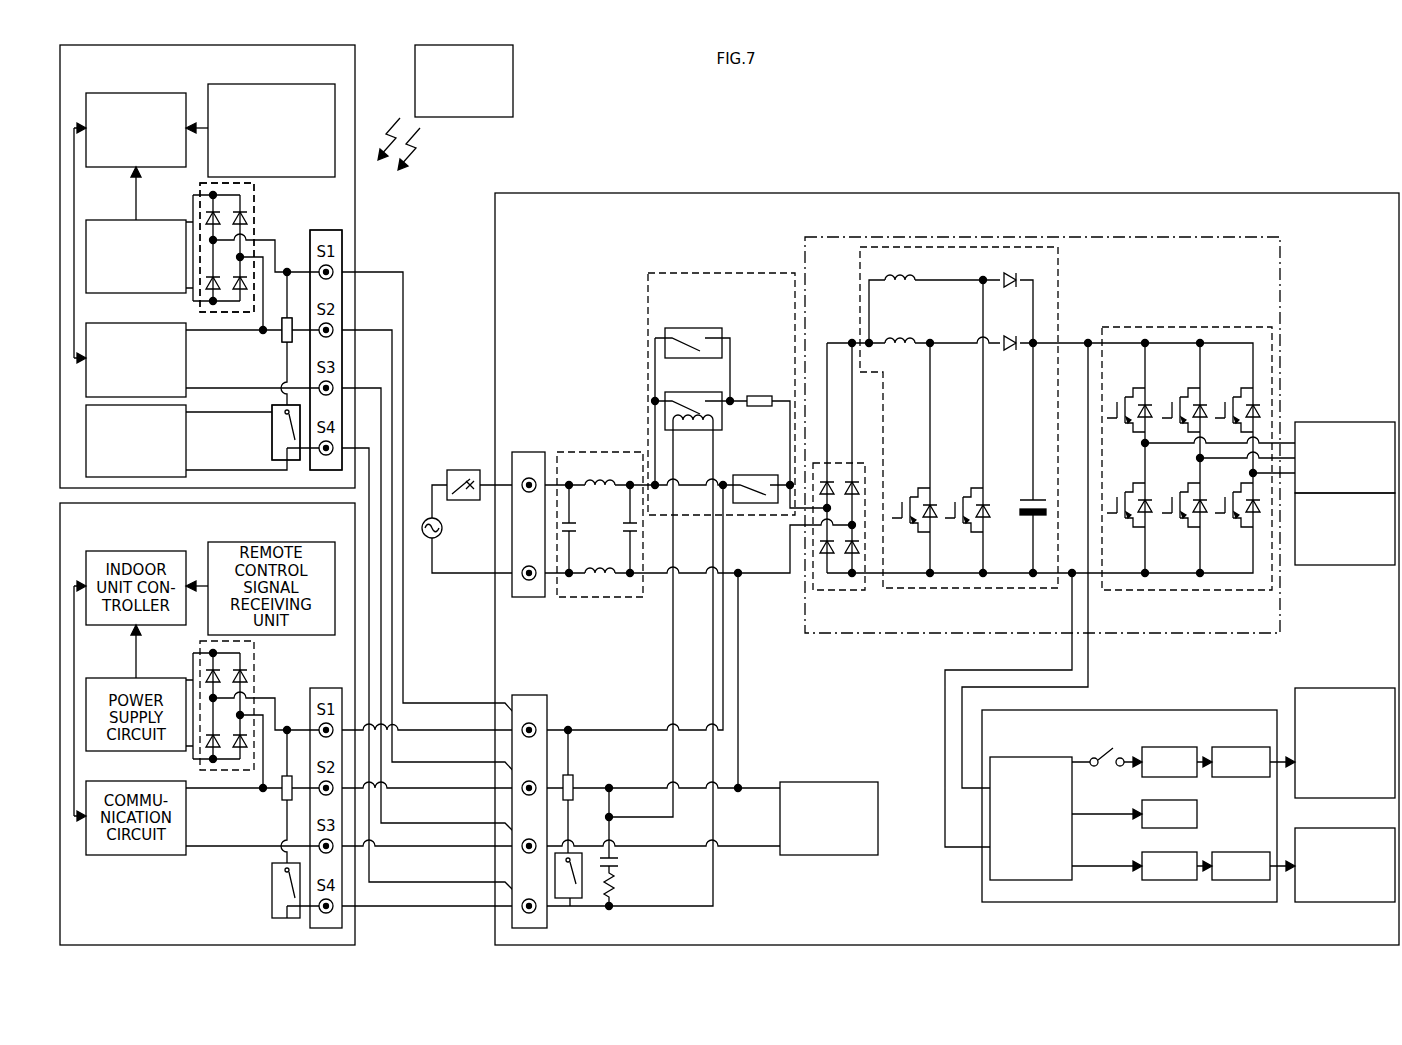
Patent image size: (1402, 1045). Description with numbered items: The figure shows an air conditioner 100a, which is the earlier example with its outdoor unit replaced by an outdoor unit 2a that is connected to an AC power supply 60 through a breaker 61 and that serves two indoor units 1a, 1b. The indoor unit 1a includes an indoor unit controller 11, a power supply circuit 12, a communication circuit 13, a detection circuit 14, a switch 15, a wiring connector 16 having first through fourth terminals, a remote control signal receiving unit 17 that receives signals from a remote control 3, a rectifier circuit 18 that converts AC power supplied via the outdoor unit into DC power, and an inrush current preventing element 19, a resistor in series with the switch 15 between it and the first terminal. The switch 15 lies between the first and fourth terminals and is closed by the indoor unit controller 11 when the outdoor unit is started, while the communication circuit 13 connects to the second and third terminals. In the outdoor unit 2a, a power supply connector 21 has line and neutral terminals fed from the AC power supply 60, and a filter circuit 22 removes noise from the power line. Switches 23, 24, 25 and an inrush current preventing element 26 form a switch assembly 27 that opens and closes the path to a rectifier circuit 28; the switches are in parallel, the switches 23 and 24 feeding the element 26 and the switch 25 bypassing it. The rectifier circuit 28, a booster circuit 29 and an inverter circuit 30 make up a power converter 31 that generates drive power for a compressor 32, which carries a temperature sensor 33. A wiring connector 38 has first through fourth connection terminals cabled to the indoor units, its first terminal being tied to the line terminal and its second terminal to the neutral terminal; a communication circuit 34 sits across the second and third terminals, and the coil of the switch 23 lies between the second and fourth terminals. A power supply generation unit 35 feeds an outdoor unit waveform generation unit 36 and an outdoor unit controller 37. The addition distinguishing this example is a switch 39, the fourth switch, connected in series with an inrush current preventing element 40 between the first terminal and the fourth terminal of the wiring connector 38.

The air conditioner 100a is at (1242, 116).
The indoor unit 1a is at (355, 240).
The indoor unit 1b is at (355, 932).
The outdoor unit 2a is at (1345, 193).
The remote control 3 is at (513, 80).
The indoor unit controller 11 is at (118, 168).
The power supply circuit 12 is at (148, 220).
The communication circuit 13 is at (140, 323).
The detection circuit 14 is at (188, 441).
The switch 15 is at (272, 424).
The wiring connector 16 is at (326, 228).
The remote control signal receiving unit 17 is at (300, 84).
The rectifier circuit 18 is at (256, 195).
The inrush current preventing element 19 is at (282, 340).
The power supply connector 21 is at (529, 450).
The filter circuit 22 is at (598, 450).
The switch 23 is at (693, 430).
The switch 24 is at (693, 328).
The switch 25 is at (755, 475).
The inrush current preventing element 26 is at (759, 396).
The switch assembly 27 is at (722, 273).
The rectifier circuit 28 is at (838, 592).
The booster circuit 29 is at (905, 590).
The inverter circuit 30 is at (1188, 590).
The power converter 31 is at (1220, 237).
The compressor 32 is at (1345, 420).
The temperature sensor 33 is at (1345, 567).
The communication circuit 34 is at (828, 780).
The power supply generation unit 35 is at (1215, 710).
The outdoor unit waveform generation unit 36 is at (1350, 688).
The outdoor unit controller 37 is at (1350, 902).
The wiring connector 38 is at (529, 693).
The switch 39 is at (578, 898).
The inrush current preventing element 40 is at (576, 776).
The AC power supply 60 is at (424, 500).
The breaker 61 is at (462, 470).